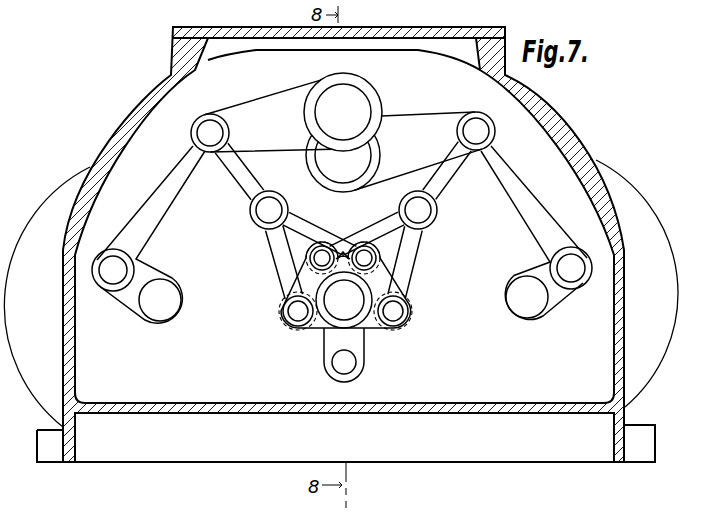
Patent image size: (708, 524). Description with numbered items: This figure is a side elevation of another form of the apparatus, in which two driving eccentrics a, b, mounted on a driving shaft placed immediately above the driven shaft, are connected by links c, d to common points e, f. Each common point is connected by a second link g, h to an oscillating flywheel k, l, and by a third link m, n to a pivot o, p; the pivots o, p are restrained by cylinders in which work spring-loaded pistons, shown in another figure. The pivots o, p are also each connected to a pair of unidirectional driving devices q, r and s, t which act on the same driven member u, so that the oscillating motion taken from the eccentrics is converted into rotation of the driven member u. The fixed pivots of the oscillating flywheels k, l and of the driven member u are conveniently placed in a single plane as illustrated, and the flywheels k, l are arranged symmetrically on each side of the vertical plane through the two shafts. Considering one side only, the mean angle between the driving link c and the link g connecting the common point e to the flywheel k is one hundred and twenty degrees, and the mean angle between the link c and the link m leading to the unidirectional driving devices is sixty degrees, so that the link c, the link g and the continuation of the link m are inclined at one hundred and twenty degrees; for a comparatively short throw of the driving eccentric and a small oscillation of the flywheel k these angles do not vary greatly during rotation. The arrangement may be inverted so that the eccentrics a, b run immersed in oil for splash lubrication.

The driving eccentric a is at (343, 112).
The driving eccentric b is at (349, 166).
The link c is at (246, 118).
The link d is at (404, 138).
The common point e is at (197, 133).
The common point f is at (489, 131).
The second link g is at (155, 218).
The second link h is at (536, 232).
The oscillating flywheel k is at (47, 297).
The oscillating flywheel l is at (629, 207).
The third link m is at (233, 176).
The third link n is at (446, 178).
The pivot o is at (266, 213).
The pivot p is at (420, 213).
The unidirectional driving device q is at (296, 312).
The unidirectional driving device r is at (372, 256).
The unidirectional driving device s is at (318, 258).
The unidirectional driving device t is at (395, 312).
The driven member u is at (340, 299).